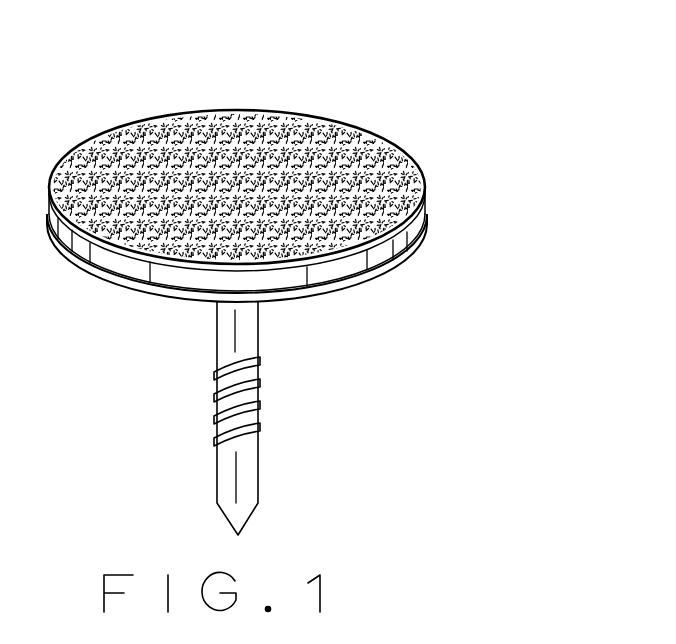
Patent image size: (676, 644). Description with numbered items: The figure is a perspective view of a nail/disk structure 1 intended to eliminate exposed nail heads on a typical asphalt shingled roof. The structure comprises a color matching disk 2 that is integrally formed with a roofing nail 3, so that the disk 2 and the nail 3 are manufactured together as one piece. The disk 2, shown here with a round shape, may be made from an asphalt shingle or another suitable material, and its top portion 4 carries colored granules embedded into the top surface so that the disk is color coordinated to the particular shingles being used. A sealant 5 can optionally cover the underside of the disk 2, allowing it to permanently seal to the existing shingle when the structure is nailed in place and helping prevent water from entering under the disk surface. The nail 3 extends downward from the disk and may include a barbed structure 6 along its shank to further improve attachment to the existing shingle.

The nail/disk structure 1 is at (418, 105).
The disk 2 is at (413, 227).
The roofing nail 3 is at (217, 346).
The top portion with colored granules 4 is at (194, 137).
The sealant 5 is at (352, 287).
The barbed structure 6 is at (217, 395).